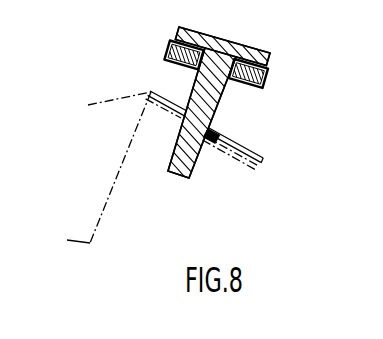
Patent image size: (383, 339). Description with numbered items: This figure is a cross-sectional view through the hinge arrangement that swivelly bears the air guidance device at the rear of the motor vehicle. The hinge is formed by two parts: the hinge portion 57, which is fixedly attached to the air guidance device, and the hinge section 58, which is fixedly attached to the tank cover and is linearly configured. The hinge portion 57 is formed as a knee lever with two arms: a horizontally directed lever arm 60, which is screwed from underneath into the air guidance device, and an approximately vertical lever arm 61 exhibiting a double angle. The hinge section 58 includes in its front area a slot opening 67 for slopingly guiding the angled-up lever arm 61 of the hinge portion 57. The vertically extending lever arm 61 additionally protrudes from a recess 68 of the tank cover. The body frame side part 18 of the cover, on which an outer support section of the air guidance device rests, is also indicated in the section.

The hinge portion 57 is at (243, 36).
The lever arm 60 is at (182, 32).
The lever arm 61 is at (215, 118).
The slot opening 67 is at (198, 71).
The hinge section 58 is at (268, 84).
The recess 68 is at (212, 142).
The body frame side part 18 is at (268, 158).